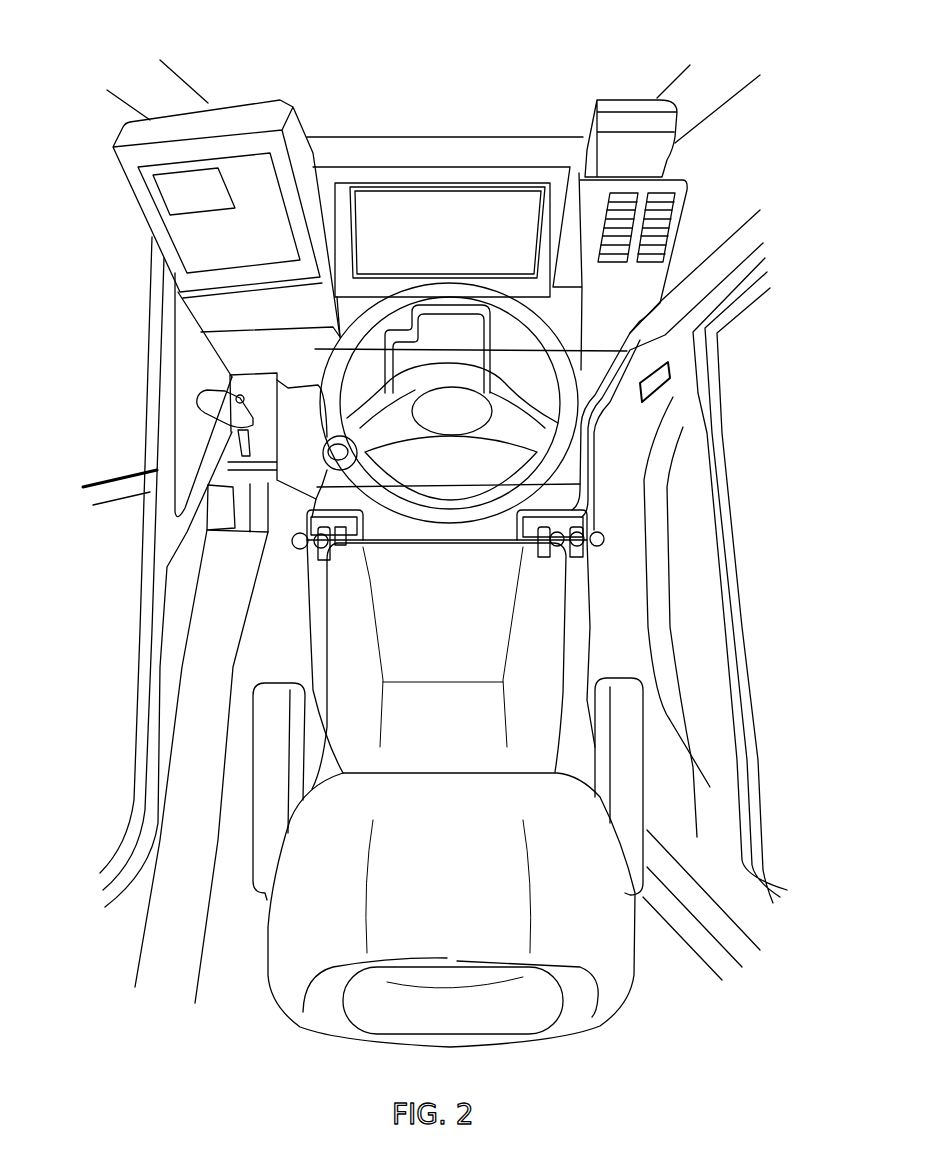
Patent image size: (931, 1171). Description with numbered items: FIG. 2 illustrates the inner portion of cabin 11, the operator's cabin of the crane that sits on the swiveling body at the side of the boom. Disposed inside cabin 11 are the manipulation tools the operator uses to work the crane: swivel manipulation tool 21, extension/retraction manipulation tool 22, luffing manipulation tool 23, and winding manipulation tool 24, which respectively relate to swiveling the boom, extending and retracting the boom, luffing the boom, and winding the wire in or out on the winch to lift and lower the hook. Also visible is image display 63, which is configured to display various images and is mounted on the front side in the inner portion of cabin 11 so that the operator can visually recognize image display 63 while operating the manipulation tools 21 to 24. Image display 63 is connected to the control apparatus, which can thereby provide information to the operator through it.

The cabin 11 is at (378, 68).
The swivel manipulation tool 21 is at (293, 541).
The extension/retraction manipulation tool 22 is at (604, 540).
The luffing manipulation tool 23 is at (315, 558).
The winding manipulation tool 24 is at (584, 546).
The image display 63 is at (175, 201).